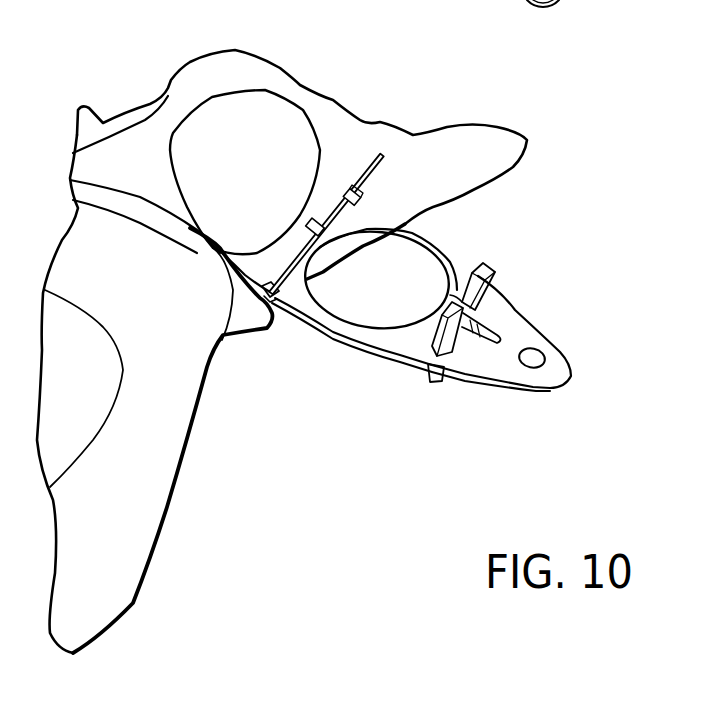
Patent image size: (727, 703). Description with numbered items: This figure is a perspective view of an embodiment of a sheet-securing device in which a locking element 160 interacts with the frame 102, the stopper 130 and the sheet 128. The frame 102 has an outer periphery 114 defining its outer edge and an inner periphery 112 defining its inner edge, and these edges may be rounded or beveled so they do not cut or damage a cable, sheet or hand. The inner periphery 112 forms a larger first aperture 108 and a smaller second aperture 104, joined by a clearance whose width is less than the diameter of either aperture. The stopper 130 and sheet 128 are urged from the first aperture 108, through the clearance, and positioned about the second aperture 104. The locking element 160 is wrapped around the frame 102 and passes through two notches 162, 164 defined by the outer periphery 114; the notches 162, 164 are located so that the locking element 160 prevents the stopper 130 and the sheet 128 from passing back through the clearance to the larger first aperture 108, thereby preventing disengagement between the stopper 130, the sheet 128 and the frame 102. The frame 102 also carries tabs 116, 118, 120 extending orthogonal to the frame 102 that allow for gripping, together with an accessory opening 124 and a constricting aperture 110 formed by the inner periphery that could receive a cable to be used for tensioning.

The frame 102 is at (421, 250).
The second aperture 104 is at (255, 325).
The first aperture 108 is at (395, 278).
The constricting aperture 110 is at (513, 380).
The inner periphery 112 is at (383, 330).
The outer periphery 114 is at (327, 330).
The tab 116 is at (487, 263).
The tab 118 is at (450, 350).
The tab 120 is at (427, 383).
The accessory opening 124 is at (540, 352).
The sheet 128 is at (120, 533).
The stopper 130 is at (253, 168).
The locking element 160 is at (330, 200).
The notch 162 is at (340, 198).
The notch 164 is at (272, 306).